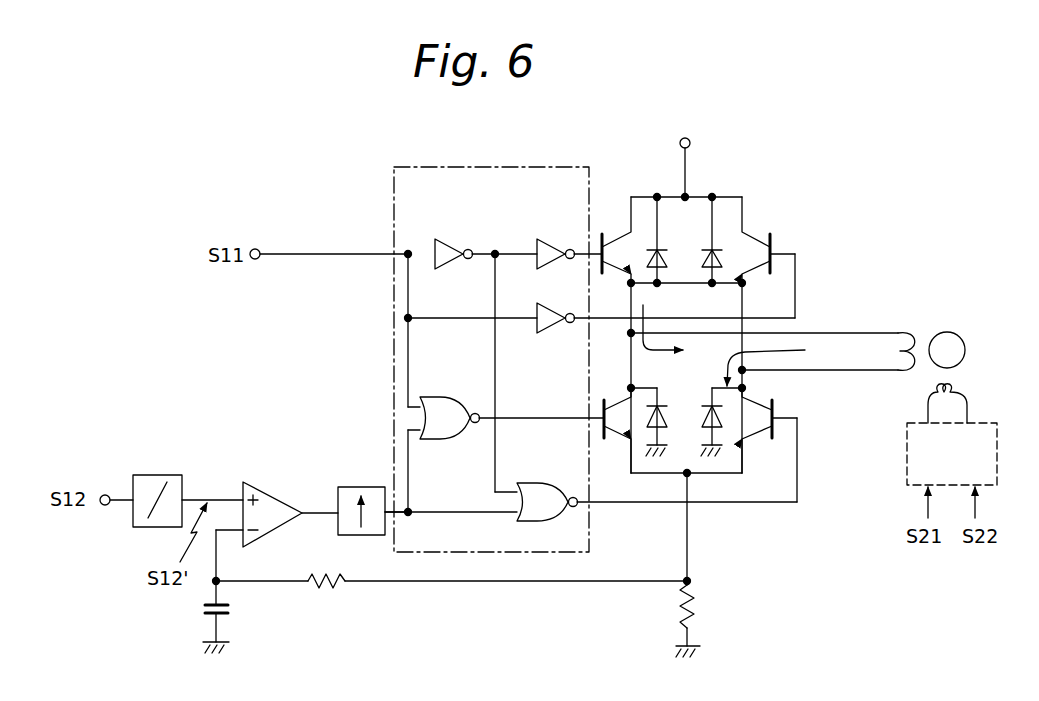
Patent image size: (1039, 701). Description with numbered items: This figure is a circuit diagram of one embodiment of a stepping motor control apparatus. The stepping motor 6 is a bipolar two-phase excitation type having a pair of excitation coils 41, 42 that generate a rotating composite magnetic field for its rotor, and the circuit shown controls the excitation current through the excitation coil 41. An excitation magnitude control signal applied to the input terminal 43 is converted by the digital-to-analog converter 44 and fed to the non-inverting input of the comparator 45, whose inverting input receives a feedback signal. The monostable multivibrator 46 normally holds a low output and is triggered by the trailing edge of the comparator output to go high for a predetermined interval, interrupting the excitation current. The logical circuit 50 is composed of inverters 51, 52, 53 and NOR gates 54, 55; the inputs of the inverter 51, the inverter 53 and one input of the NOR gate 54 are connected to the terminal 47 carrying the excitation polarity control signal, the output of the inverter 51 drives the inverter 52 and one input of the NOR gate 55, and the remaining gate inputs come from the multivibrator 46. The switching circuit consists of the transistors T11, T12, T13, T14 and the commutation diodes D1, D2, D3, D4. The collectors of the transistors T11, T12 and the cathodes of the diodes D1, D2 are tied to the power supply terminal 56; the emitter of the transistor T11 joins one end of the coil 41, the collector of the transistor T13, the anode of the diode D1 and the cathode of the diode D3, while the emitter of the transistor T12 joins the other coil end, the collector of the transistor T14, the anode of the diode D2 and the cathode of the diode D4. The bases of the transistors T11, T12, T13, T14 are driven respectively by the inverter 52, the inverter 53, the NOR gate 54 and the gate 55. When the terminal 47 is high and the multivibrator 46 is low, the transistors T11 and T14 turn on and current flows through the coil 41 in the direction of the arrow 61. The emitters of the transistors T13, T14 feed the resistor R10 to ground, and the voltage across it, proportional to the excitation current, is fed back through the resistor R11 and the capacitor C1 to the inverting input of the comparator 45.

The stepping motor 6 is at (952, 332).
The excitation coil 41 is at (904, 330).
The excitation coil 42 is at (971, 393).
The input terminal 43 is at (104, 492).
The digital-to-analog converter 44 is at (162, 474).
The comparator 45 is at (256, 481).
The monostable multivibrator 46 is at (352, 481).
The input terminal 47 is at (256, 248).
The logical circuit 50 is at (488, 165).
The inverter 51 is at (448, 239).
The inverter 52 is at (544, 239).
The inverter 53 is at (556, 330).
The NOR gate 54 is at (438, 397).
The NOR gate 55 is at (534, 482).
The terminal 56 is at (686, 138).
The arrow 61 is at (737, 345).
The transistor T11 is at (614, 244).
The transistor T12 is at (755, 240).
The transistor T13 is at (600, 416).
The transistor T14 is at (760, 413).
The commutation diode D1 is at (664, 258).
The commutation diode D2 is at (707, 260).
The commutation diode D3 is at (673, 418).
The commutation diode D4 is at (698, 402).
The resistor R10 is at (700, 608).
The resistor R11 is at (329, 585).
The capacitor C1 is at (232, 610).